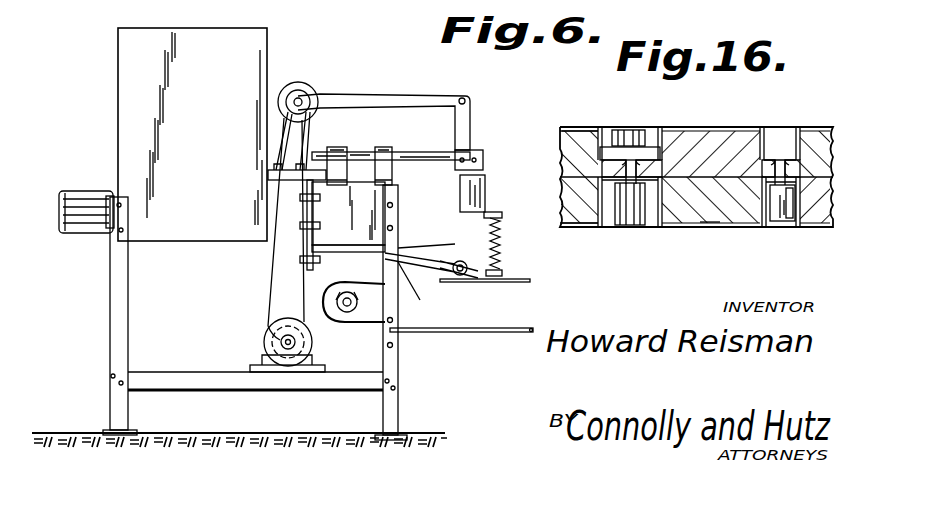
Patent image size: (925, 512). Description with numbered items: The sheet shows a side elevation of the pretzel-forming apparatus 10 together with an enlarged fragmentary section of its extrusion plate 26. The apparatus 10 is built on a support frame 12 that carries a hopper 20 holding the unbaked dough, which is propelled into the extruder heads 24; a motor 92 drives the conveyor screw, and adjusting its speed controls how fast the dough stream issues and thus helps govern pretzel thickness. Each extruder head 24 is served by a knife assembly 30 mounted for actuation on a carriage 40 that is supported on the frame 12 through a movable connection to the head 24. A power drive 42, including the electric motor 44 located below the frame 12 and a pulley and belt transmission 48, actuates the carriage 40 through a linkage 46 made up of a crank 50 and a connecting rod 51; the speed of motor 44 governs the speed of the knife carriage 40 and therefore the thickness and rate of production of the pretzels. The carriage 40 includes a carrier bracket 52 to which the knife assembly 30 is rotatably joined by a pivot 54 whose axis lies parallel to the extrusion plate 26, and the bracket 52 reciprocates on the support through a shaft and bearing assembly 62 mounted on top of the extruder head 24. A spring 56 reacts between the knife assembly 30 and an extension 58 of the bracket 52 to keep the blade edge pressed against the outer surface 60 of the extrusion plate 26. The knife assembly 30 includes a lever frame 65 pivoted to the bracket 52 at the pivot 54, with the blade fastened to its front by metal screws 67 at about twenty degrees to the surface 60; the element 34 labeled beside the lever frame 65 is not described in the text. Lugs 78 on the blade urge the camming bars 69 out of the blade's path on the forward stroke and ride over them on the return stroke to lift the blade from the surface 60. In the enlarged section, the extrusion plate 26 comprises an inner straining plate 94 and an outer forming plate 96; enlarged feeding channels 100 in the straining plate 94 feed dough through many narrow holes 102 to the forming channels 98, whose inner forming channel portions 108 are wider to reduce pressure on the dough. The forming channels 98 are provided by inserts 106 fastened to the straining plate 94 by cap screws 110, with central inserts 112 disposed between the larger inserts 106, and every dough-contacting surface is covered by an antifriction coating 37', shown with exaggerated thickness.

In FIG. 6, the apparatus 10 is at (504, 117).
In FIG. 6, the support frame 12 is at (398, 400).
In FIG. 6, the hopper 20 is at (268, 72).
In FIG. 6, the extruder head 24 is at (392, 198).
In FIG. 16, the extrusion plate 26 is at (578, 114).
In FIG. 6, the knife assembly 30 is at (464, 256).
In FIG. 6, the lever arm 34 is at (480, 282).
In FIG. 16, the antifriction means 37' is at (699, 187).
In FIG. 6, the carriage 40 is at (486, 162).
In FIG. 6, the power drive 42 is at (252, 333).
In FIG. 6, the electric motor 44 is at (274, 344).
In FIG. 6, the linkage 46 is at (379, 90).
In FIG. 6, the pulley and belt transmission 48 is at (322, 146).
In FIG. 6, the crank 50 is at (312, 88).
In FIG. 6, the connecting rod 51 is at (394, 102).
In FIG. 6, the carrier bracket 52 is at (486, 184).
In FIG. 6, the pivot 54 is at (468, 267).
In FIG. 6, the spring 56 is at (502, 246).
In FIG. 6, the extension 58 is at (502, 216).
In FIG. 6, the outer surface 60 is at (302, 266).
In FIG. 16, the outer surface 60 is at (708, 234).
In FIG. 6, the reciprocating shaft and bearing assembly 62 is at (409, 150).
In FIG. 6, the lever frame 65 is at (450, 286).
In FIG. 6, the metal screws 67 is at (502, 273).
In FIG. 6, the camming bar 69 is at (342, 284).
In FIG. 6, the lugs 78 is at (414, 286).
In FIG. 6, the motor 92 is at (109, 232).
In FIG. 6, the inner straining plate 94 is at (390, 255).
In FIG. 16, the inner straining plate 94 is at (728, 160).
In FIG. 6, the outer forming plate 96 is at (402, 258).
In FIG. 16, the forming channels 98 is at (782, 232).
In FIG. 16, the feeding channels 100 is at (784, 140).
In FIG. 16, the holes 102 is at (630, 184).
In FIG. 16, the inserts 106 is at (762, 184).
In FIG. 16, the inner forming channel portions 108 is at (798, 232).
In FIG. 16, the cap screws 110 is at (628, 127).
In FIG. 16, the central inserts 112 is at (612, 232).